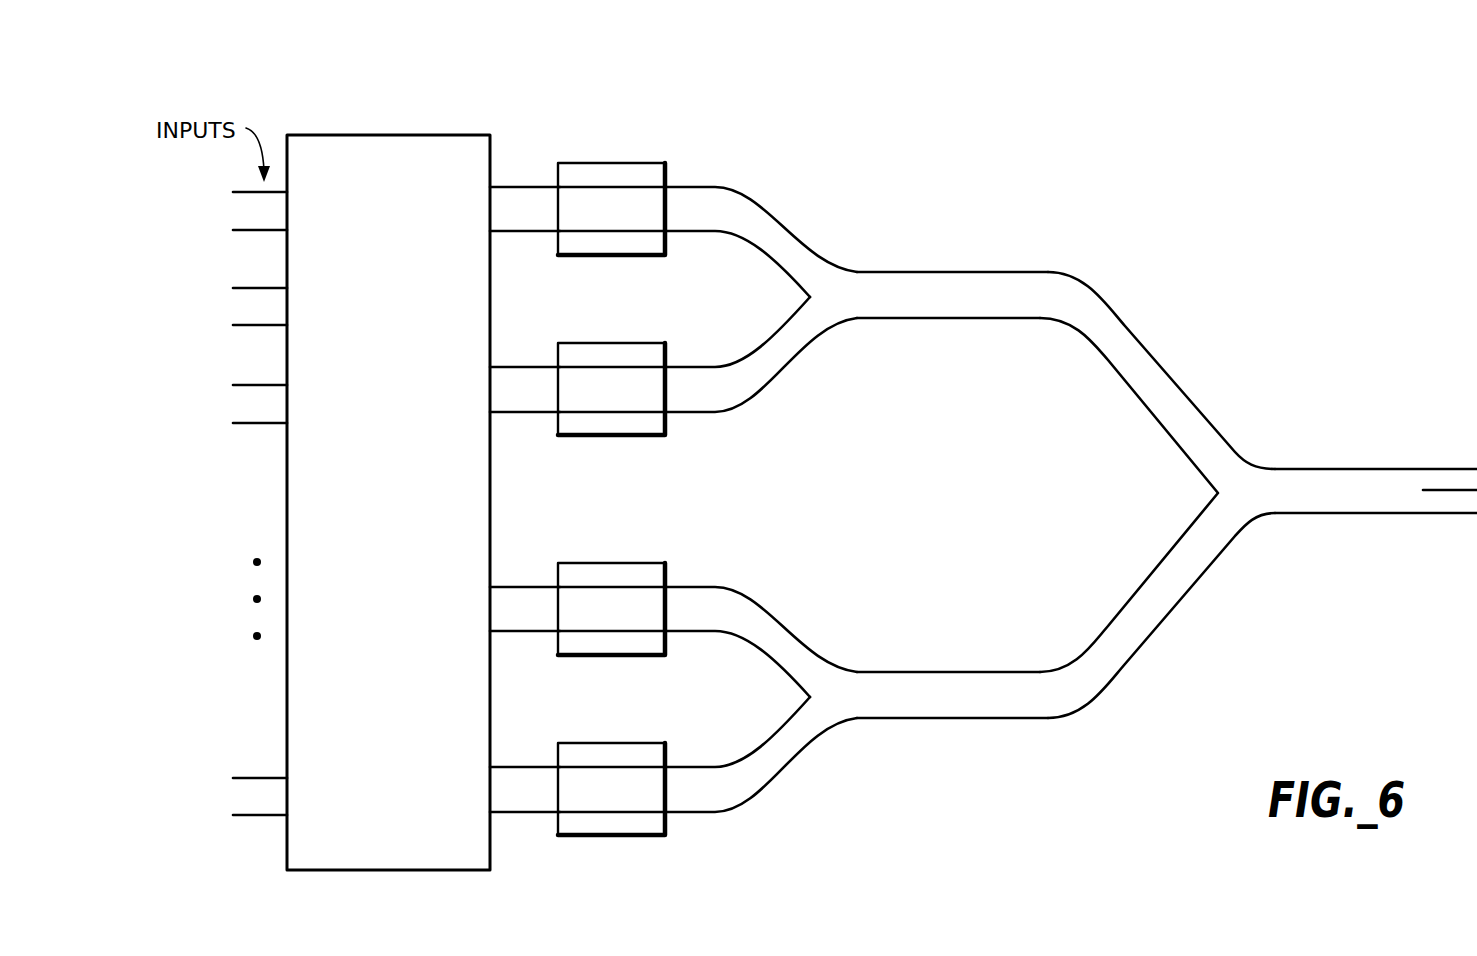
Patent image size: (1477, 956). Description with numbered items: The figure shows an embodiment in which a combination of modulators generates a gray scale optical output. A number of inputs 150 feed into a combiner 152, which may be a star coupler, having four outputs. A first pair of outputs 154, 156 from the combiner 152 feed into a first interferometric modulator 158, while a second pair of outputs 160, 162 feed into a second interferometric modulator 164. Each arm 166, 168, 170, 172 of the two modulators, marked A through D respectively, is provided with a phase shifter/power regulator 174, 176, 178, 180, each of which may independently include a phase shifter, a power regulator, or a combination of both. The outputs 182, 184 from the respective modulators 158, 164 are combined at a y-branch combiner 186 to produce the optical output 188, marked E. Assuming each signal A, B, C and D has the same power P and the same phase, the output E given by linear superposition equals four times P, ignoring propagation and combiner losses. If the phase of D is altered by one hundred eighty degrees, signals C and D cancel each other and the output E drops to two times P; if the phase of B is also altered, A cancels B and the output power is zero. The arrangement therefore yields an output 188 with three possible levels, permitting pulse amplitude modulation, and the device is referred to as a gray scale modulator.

The inputs 150 is at (238, 410).
The combiner 152 is at (383, 134).
The first output 154 is at (512, 186).
The first pair output 156 is at (512, 366).
The first interferometric modulator 158 is at (842, 110).
The second pair output 160 is at (512, 586).
The second pair output 162 is at (512, 766).
The second interferometric modulator 164 is at (843, 847).
The arm A 166 is at (703, 193).
The arm B 168 is at (703, 402).
The arm C 170 is at (703, 593).
The arm D 172 is at (703, 802).
The phase shifter/power regulator 174 is at (603, 163).
The phase shifter/power regulator 176 is at (603, 343).
The phase shifter/power regulator 178 is at (603, 563).
The phase shifter/power regulator 180 is at (603, 743).
The output of first modulator 182 is at (845, 279).
The output of second modulator 184 is at (845, 679).
The y-branch combiner 186 is at (1242, 470).
The optical output 188 is at (1452, 487).